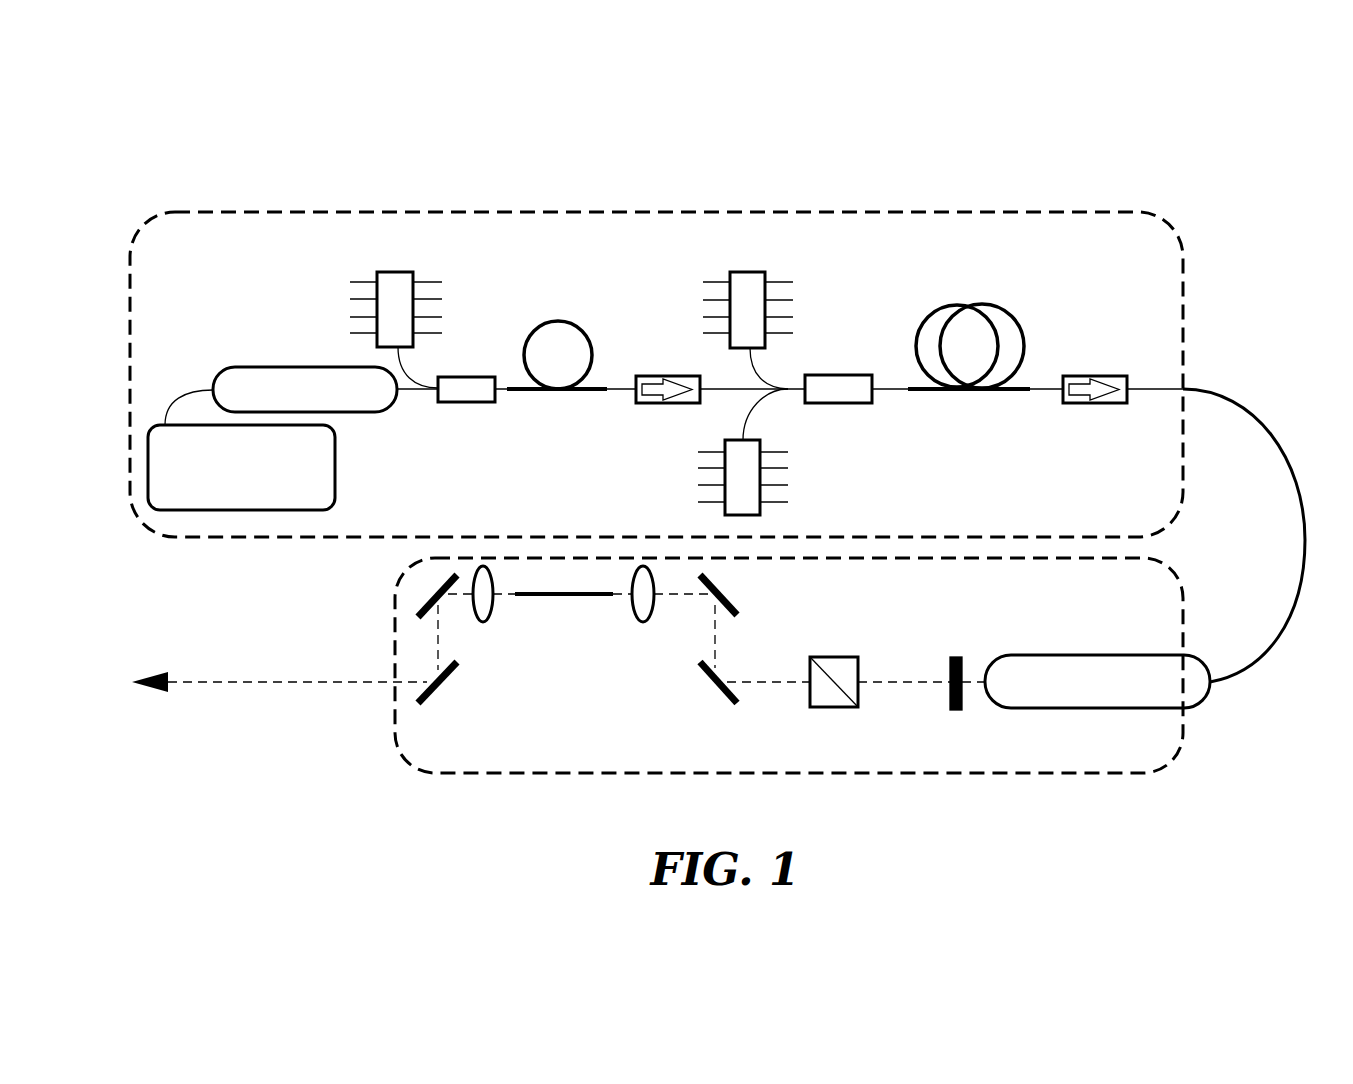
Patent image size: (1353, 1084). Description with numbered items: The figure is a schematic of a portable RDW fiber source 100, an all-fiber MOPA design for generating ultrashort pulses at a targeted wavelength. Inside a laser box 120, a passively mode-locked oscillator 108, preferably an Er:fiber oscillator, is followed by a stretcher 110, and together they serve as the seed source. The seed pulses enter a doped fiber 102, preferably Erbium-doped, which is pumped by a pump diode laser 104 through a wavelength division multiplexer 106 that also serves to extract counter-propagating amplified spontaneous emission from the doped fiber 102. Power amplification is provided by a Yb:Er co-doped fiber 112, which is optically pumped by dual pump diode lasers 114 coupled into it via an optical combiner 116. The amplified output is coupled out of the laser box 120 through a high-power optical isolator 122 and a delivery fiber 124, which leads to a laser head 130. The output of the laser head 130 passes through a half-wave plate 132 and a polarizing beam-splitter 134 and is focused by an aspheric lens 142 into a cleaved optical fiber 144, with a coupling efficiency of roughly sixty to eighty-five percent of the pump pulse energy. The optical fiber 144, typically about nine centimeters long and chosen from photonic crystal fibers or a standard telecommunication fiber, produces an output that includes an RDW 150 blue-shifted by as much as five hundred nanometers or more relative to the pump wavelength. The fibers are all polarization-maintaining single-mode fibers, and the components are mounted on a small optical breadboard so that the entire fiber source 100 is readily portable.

The portable RDW fiber source 100 is at (518, 160).
The doped fiber 102 is at (556, 321).
The pump diode laser 104 is at (398, 272).
The wavelength division multiplexer 106 is at (473, 402).
The passively mode-locked oscillator 108 is at (221, 486).
The stretcher 110 is at (279, 404).
The Yb:Er co-doped fiber 112 is at (960, 306).
The dual pump diode lasers 114 is at (743, 272).
The optical combiner 116 is at (840, 375).
The laser box 120 is at (1096, 254).
The high-power optical isolator 122 is at (1105, 403).
The delivery fiber 124 is at (1237, 408).
The laser head 130 is at (1079, 692).
The half-wave plate 132 is at (955, 710).
The polarizing beam-splitter 134 is at (833, 657).
The aspheric lens 142 is at (643, 622).
The optical fiber 144 is at (575, 596).
The RDW 150 is at (330, 682).